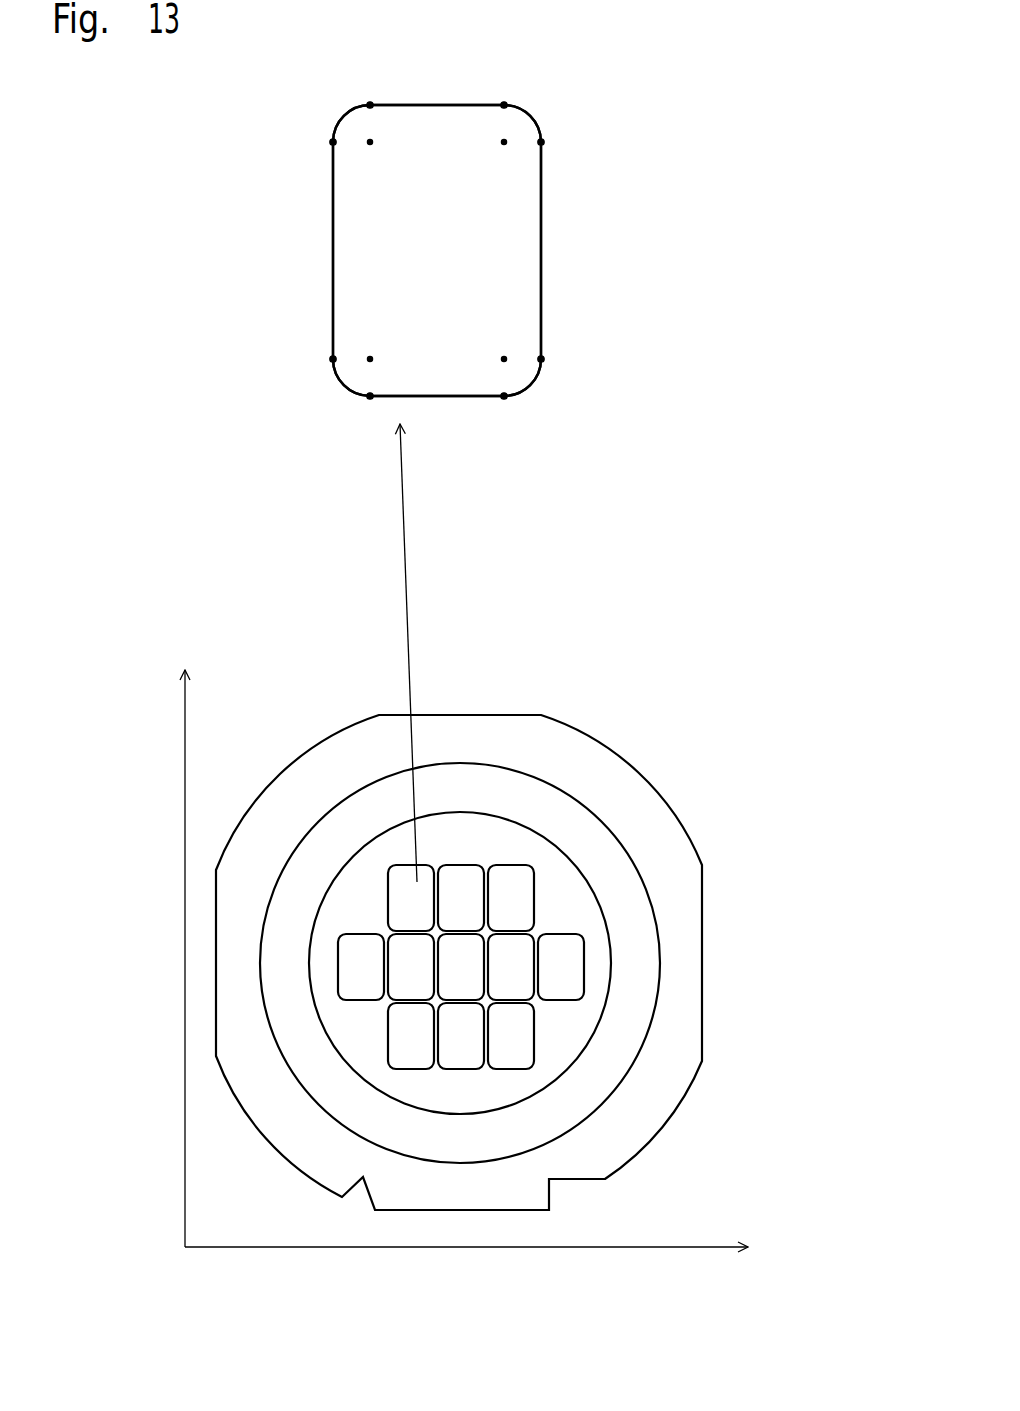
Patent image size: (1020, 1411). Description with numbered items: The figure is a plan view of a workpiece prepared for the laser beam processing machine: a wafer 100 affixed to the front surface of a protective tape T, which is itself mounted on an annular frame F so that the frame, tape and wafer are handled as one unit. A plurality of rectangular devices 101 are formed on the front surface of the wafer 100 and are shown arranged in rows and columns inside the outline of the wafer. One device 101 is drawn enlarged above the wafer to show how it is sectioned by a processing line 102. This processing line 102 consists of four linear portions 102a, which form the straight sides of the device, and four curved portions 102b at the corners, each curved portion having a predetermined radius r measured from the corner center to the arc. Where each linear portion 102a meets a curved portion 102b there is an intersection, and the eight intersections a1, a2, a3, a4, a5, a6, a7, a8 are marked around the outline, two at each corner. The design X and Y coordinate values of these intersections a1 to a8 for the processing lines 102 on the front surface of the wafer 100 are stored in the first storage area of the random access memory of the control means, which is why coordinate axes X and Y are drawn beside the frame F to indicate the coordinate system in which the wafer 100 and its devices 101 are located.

The wafer 100 is at (584, 873).
The device 101 is at (456, 258).
The processing line 102 is at (545, 212).
The linear portion 102a is at (438, 104).
The curved portion 102b is at (342, 118).
The intersection a1 is at (370, 104).
The intersection a2 is at (504, 104).
The intersection a3 is at (543, 142).
The intersection a4 is at (543, 360).
The intersection a5 is at (504, 398).
The intersection a6 is at (370, 398).
The intersection a7 is at (331, 360).
The intersection a8 is at (331, 142).
The radius r is at (345, 117).
The annular frame F is at (682, 947).
The protective tape T is at (613, 1032).
The X coordinate X is at (479, 1247).
The Y coordinate Y is at (183, 941).